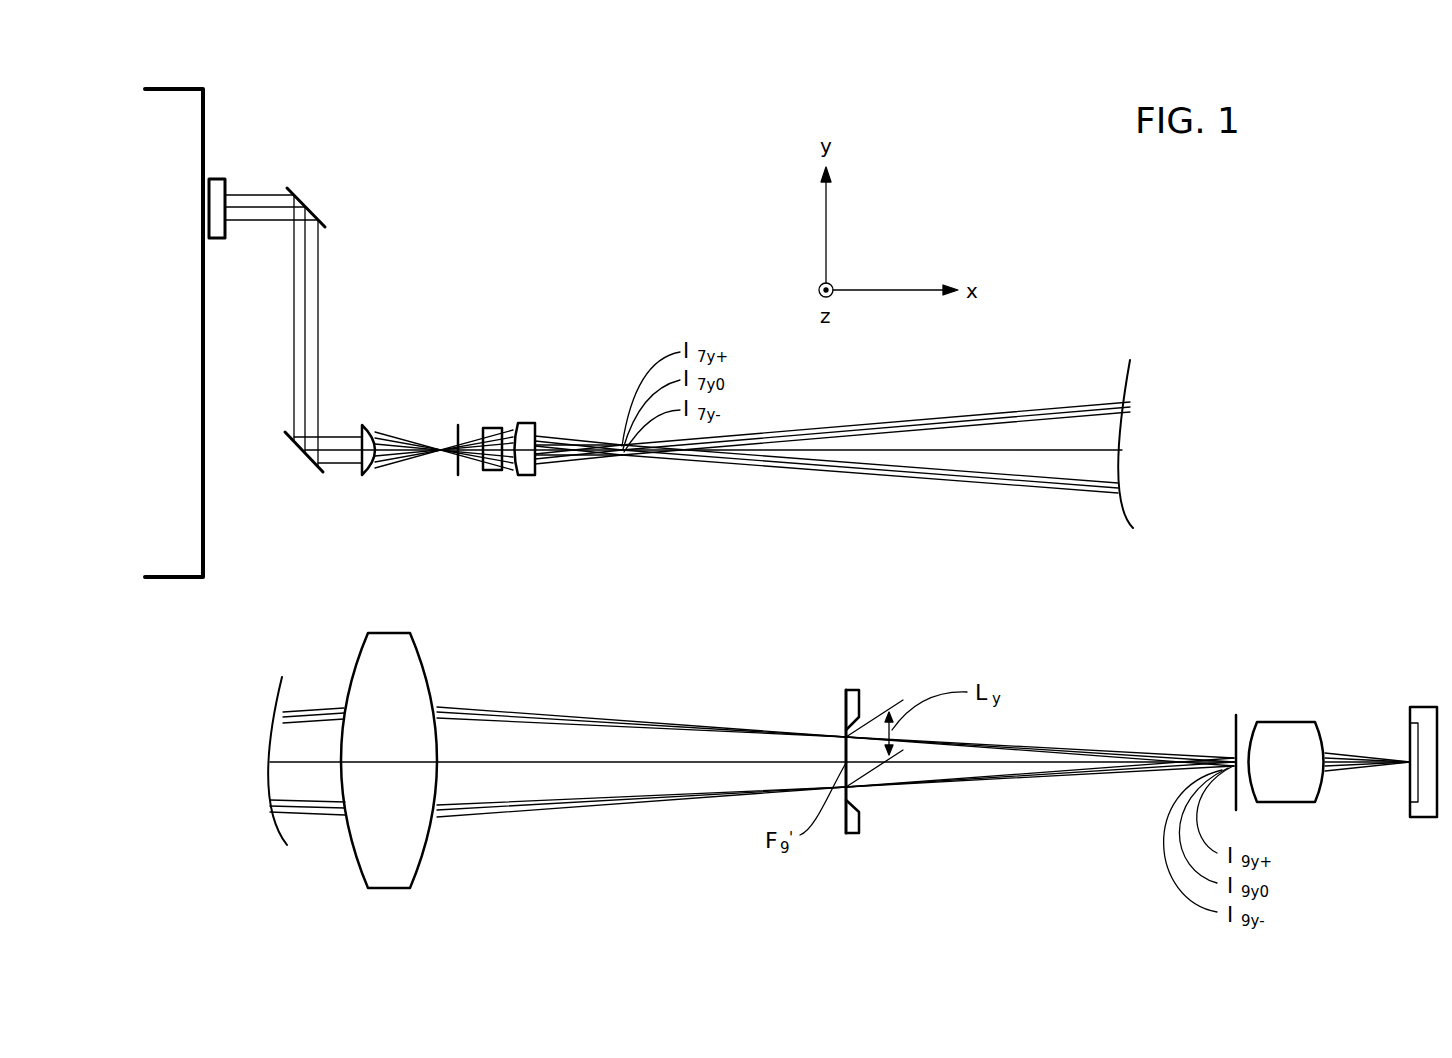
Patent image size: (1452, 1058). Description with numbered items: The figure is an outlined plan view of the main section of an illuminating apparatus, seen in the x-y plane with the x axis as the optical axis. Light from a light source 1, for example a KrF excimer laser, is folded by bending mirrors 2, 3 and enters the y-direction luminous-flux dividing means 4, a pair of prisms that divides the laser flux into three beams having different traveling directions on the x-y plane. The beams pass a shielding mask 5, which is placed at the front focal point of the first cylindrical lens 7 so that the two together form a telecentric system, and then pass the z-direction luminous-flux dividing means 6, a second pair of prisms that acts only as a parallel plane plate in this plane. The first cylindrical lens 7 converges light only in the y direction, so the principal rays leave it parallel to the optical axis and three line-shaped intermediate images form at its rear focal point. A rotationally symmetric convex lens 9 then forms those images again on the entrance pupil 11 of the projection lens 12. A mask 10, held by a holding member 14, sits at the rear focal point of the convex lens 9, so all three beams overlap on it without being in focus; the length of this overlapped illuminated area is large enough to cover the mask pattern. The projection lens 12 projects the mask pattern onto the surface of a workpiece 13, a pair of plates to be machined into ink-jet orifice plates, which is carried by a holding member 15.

The light source 1 is at (185, 118).
The bending mirror 2 is at (308, 207).
The bending mirror 3 is at (305, 450).
The y-direction luminous-flux dividing means 4 is at (368, 422).
The shielding mask 5 is at (459, 425).
The z-direction luminous-flux dividing means 6 is at (497, 428).
The first cylindrical lens 7 is at (530, 423).
The convex lens 9 is at (368, 650).
The mask 10 is at (844, 717).
The entrance pupil 11 is at (1234, 722).
The projection lens 12 is at (1275, 735).
The workpiece 13 is at (1408, 730).
The holding member 14 is at (855, 690).
The holding member 15 is at (1430, 712).